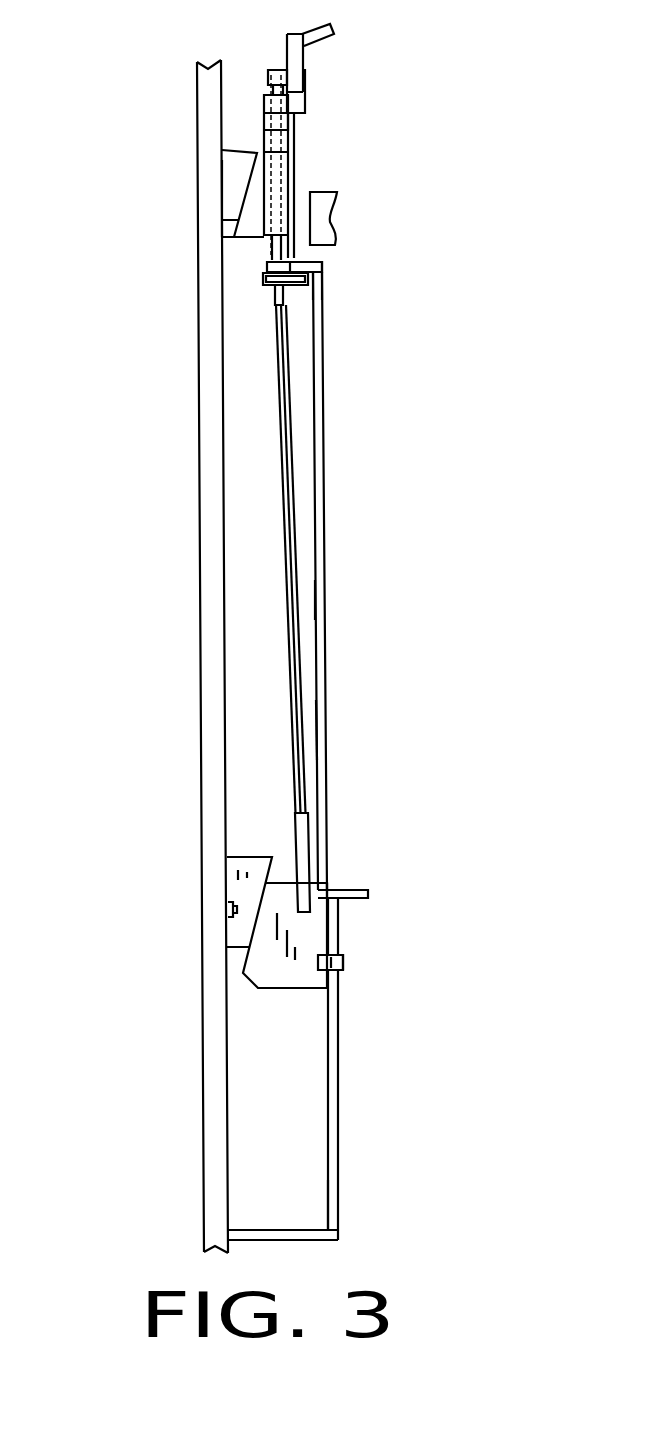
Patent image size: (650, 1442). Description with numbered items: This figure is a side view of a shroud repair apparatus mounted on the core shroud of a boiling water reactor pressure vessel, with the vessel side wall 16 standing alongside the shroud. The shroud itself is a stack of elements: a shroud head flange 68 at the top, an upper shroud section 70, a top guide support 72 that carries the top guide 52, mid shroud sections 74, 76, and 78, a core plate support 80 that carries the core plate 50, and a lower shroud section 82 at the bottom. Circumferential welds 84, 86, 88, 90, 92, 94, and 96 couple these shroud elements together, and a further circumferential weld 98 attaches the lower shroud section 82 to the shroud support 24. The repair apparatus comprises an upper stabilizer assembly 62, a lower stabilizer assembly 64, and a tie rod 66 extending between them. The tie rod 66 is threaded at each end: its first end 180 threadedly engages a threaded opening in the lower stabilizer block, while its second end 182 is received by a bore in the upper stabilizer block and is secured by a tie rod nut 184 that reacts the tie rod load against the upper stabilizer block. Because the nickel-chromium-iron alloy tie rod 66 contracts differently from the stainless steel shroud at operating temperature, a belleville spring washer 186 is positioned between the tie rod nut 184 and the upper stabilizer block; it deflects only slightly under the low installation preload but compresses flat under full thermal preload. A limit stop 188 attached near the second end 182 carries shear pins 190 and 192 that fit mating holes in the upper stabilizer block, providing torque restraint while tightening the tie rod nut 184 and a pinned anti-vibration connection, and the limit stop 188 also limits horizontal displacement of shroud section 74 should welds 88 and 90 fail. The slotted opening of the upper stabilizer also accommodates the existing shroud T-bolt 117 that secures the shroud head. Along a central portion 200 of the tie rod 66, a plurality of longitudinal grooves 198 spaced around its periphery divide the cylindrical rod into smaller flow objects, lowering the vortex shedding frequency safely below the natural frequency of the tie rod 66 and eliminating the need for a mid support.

The side wall 16 is at (200, 564).
The shroud support 24 is at (338, 1213).
The core plate 50 is at (375, 892).
The top guide 52 is at (337, 214).
The upper stabilizer assembly 62 is at (186, 217).
The lower stabilizer assembly 64 is at (260, 830).
The tie rod 66 is at (296, 537).
The shroud head flange 68 is at (308, 97).
The upper shroud section 70 is at (298, 165).
The top guide support 72 is at (323, 266).
The mid shroud section 74 is at (325, 428).
The mid shroud section 76 is at (326, 725).
The mid shroud section 78 is at (330, 923).
The core plate support 80 is at (344, 965).
The lower shroud section 82 is at (338, 1100).
The circumferential weld 84 is at (308, 116).
The circumferential weld 86 is at (310, 256).
The circumferential weld 88 is at (330, 274).
The circumferential weld 90 is at (326, 597).
The circumferential weld 92 is at (342, 880).
The circumferential weld 94 is at (334, 953).
The circumferential weld 96 is at (345, 975).
The circumferential weld 98 is at (334, 1193).
The shroud T-bolt 117 is at (272, 118).
The first end 180 is at (305, 850).
The second end 182 is at (292, 298).
The tie rod nut 184 is at (290, 128).
The belleville spring washer 186 is at (266, 153).
The limit stop 188 is at (322, 290).
The shear pin 190 is at (272, 266).
The shear pin 192 is at (268, 284).
The longitudinal grooves 198 is at (284, 403).
The central portion 200 is at (299, 504).